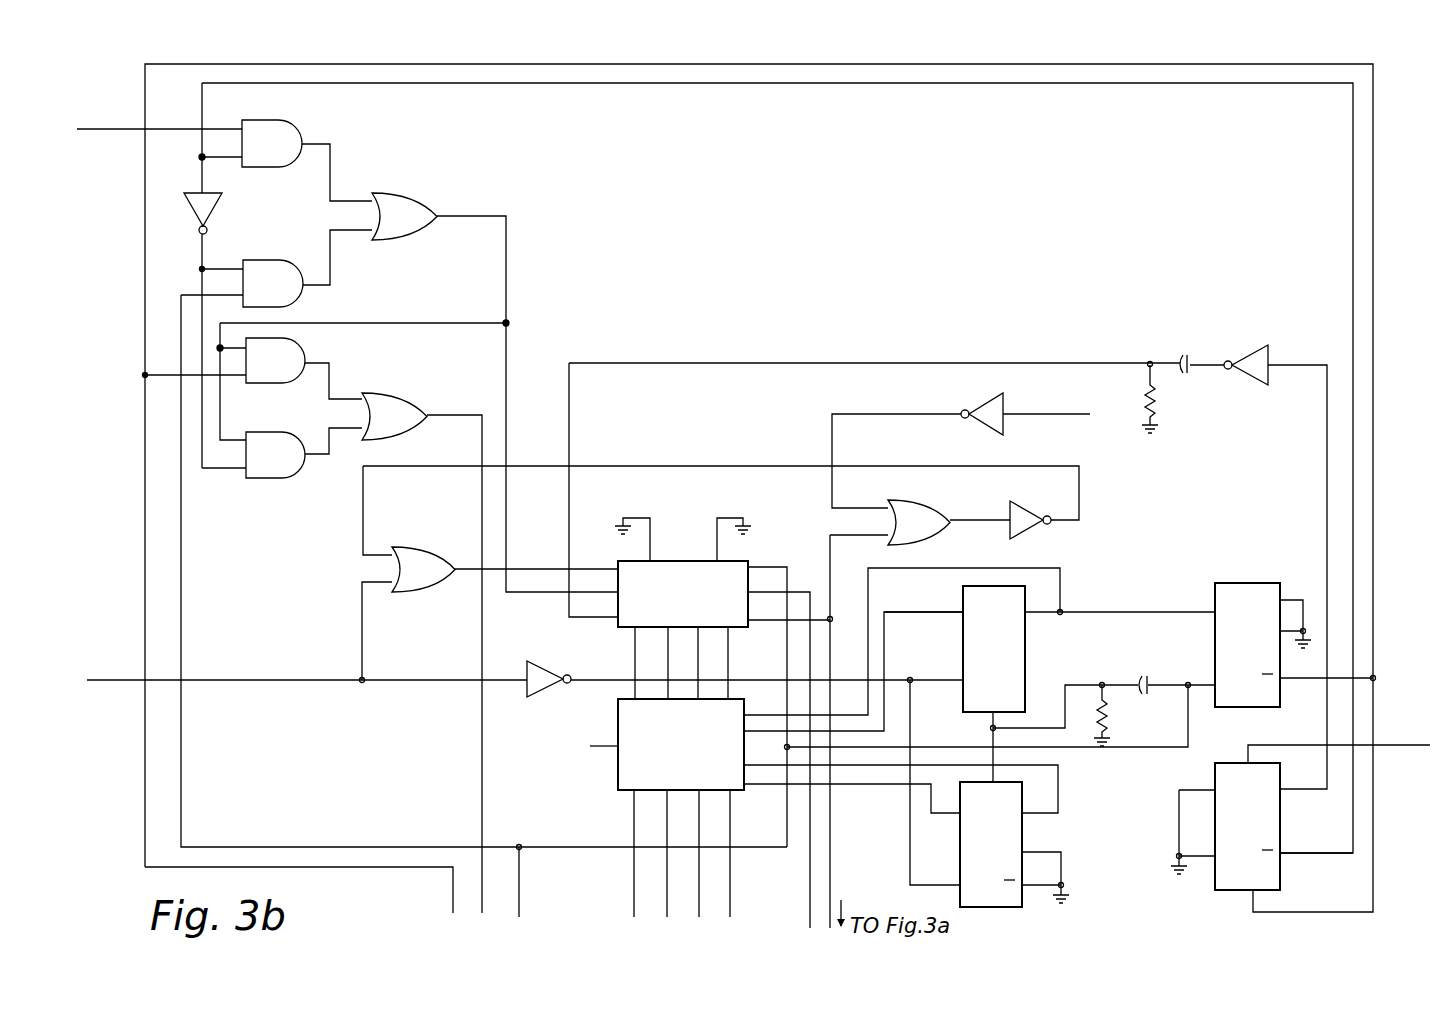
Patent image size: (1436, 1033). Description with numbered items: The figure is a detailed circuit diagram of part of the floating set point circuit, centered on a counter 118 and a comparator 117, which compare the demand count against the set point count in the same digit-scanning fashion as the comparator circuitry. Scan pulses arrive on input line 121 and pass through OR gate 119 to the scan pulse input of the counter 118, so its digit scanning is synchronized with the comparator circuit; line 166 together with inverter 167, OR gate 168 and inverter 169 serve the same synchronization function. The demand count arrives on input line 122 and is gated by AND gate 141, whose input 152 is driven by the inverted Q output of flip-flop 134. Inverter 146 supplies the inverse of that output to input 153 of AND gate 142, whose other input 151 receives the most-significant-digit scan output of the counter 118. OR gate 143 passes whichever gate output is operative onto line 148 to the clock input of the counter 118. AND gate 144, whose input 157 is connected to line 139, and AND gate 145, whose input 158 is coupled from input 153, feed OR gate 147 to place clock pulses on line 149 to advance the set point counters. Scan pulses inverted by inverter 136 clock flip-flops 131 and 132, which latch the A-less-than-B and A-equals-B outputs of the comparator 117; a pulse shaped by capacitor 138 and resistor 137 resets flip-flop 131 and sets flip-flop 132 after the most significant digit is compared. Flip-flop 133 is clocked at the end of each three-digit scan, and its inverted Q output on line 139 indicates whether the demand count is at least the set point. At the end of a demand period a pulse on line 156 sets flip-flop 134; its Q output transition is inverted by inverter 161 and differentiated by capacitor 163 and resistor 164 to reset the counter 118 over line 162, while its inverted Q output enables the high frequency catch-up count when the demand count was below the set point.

The comparator 117 is at (617, 790).
The counter 118 is at (686, 560).
The OR gate 119 is at (418, 547).
The input line 121 is at (111, 677).
The input line 122 is at (110, 134).
The flip-flop 131 is at (1025, 650).
The flip-flop 132 is at (1024, 835).
The flip-flop 133 is at (1253, 583).
The flip-flop 134 is at (1222, 892).
The inverter 136 is at (534, 697).
The resistor 137 is at (1108, 709).
The capacitor 138 is at (1150, 677).
The line 139 is at (1136, 62).
The AND gate 141 is at (298, 131).
The AND gate 142 is at (283, 261).
The OR gate 143 is at (400, 194).
The AND gate 144 is at (300, 346).
The AND gate 145 is at (283, 480).
The inverter 146 is at (215, 201).
The OR gate 147 is at (386, 393).
The line 148 is at (512, 382).
The line 149 is at (479, 746).
The input 151 is at (178, 307).
The input 152 is at (212, 158).
The input 153 is at (202, 271).
The line 156 is at (1401, 744).
The input 157 is at (230, 379).
The input 158 is at (224, 474).
The inverter 161 is at (1266, 345).
The line 162 is at (715, 363).
The capacitor 163 is at (1181, 356).
The resistor 164 is at (1153, 402).
The line 166 is at (1068, 420).
The inverter 167 is at (996, 432).
The OR gate 168 is at (930, 542).
The inverter 169 is at (1032, 530).